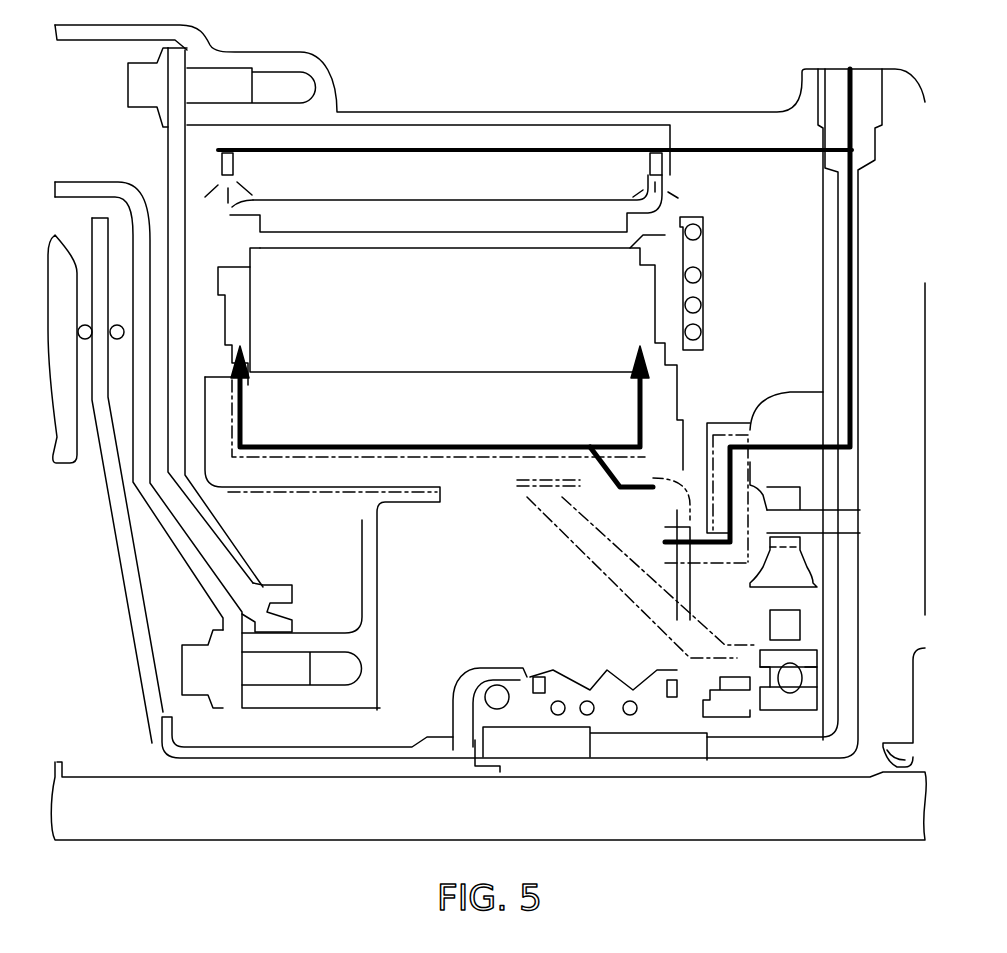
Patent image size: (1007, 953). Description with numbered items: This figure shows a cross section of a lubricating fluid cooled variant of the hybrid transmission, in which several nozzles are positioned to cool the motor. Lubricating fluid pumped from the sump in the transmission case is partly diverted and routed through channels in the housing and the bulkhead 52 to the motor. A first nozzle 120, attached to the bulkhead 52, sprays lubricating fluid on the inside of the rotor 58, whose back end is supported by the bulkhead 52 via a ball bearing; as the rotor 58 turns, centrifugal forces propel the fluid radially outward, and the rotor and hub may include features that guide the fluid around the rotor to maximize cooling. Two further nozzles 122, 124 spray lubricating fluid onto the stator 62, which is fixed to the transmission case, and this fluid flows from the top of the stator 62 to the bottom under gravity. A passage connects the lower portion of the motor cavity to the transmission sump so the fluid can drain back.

The bulkhead 52 is at (822, 305).
The stator 62 is at (447, 247).
The rotor 58 is at (487, 457).
The first nozzle 120 is at (655, 533).
The nozzle 122 is at (228, 150).
The nozzle 124 is at (672, 188).